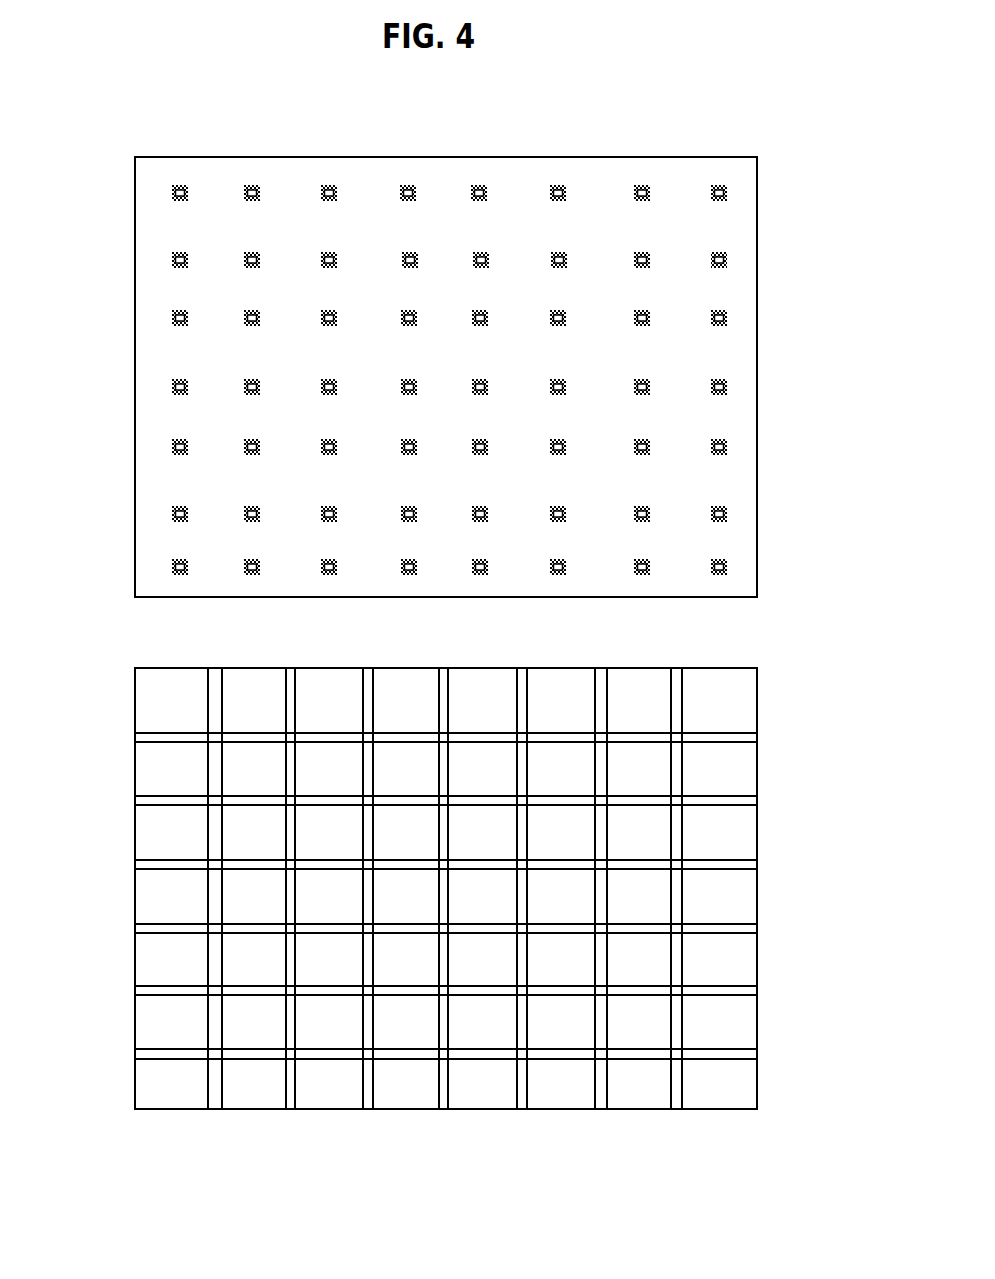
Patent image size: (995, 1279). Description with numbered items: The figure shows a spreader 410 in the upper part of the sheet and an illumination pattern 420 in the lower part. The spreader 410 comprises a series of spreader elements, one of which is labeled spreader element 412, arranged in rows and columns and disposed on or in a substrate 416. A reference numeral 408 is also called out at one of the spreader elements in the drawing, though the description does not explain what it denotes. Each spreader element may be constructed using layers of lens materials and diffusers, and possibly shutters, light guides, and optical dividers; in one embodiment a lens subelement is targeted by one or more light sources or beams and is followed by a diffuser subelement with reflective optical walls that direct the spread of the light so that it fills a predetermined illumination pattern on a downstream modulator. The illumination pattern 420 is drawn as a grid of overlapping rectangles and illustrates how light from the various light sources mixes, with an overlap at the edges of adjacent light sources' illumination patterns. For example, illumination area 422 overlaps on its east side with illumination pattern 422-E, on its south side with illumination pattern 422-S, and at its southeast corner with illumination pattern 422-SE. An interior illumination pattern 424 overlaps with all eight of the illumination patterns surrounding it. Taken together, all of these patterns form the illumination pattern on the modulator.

The alignment marker 408 is at (781, 243).
The spreader 410 is at (458, 377).
The spreader element 412 is at (719, 272).
The substrate 416 is at (728, 413).
The illumination pattern 420 is at (402, 888).
The illumination area 422 is at (171, 700).
The illumination pattern 422-E is at (254, 700).
The illumination pattern 422-S is at (171, 769).
The illumination pattern 422-SE is at (254, 769).
The illumination pattern 424 is at (406, 896).